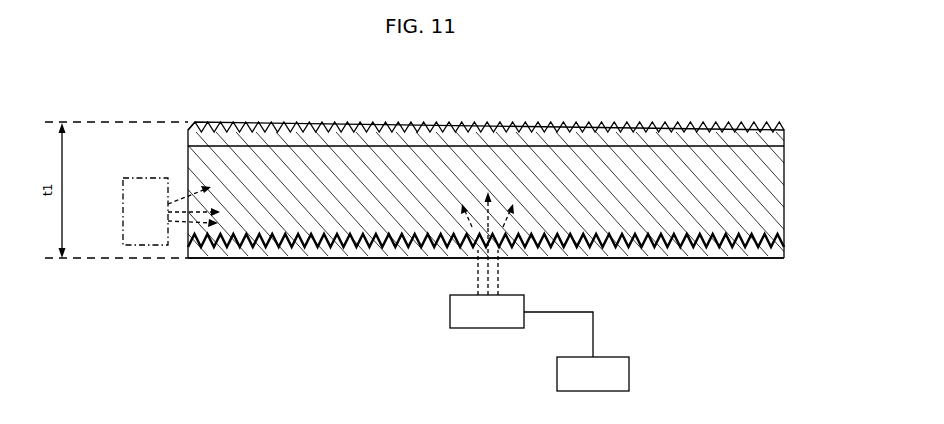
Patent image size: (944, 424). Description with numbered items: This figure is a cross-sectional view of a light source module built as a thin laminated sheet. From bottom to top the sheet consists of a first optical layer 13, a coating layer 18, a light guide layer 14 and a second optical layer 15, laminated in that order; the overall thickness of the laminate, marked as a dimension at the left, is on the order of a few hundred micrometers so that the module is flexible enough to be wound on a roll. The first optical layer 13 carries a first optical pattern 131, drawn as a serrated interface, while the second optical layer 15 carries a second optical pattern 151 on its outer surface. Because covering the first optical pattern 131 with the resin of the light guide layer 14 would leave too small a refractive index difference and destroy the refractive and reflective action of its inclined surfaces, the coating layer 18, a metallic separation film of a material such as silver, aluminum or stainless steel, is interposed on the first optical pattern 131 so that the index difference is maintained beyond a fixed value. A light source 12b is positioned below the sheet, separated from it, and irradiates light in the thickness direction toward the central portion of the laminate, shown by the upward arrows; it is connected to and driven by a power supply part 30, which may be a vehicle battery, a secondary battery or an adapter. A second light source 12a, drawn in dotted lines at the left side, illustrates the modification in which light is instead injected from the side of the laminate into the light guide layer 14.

The light source 12a is at (143, 246).
The light source 12b is at (485, 329).
The first optical layer 13 is at (515, 281).
The first optical pattern 131 is at (726, 260).
The light guide layer 14 is at (785, 192).
The second optical layer 15 is at (514, 110).
The second optical pattern 151 is at (707, 122).
The coating layer 18 is at (782, 228).
The power supply part 30 is at (630, 372).